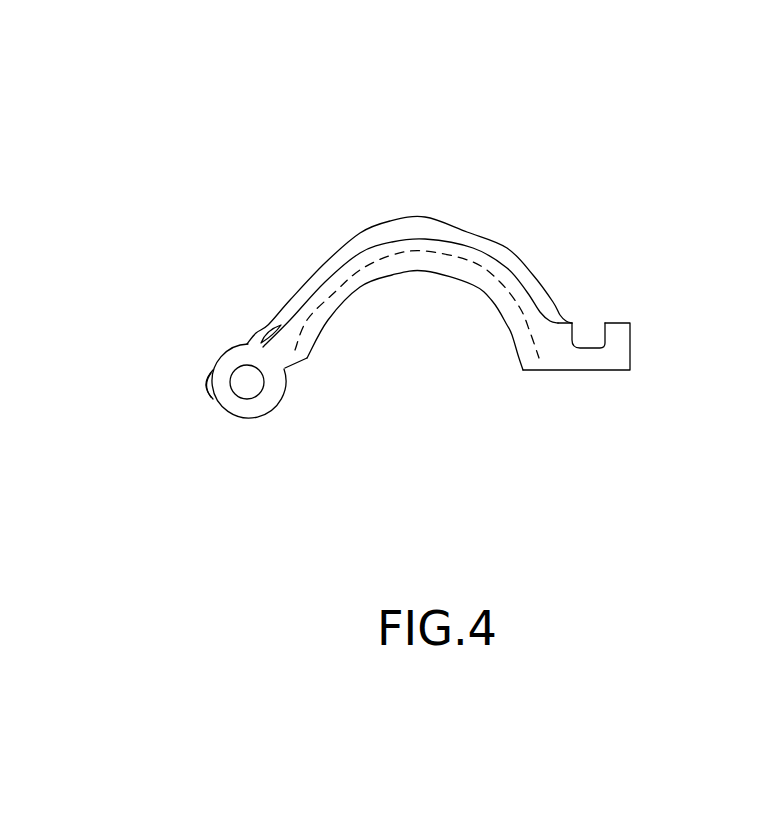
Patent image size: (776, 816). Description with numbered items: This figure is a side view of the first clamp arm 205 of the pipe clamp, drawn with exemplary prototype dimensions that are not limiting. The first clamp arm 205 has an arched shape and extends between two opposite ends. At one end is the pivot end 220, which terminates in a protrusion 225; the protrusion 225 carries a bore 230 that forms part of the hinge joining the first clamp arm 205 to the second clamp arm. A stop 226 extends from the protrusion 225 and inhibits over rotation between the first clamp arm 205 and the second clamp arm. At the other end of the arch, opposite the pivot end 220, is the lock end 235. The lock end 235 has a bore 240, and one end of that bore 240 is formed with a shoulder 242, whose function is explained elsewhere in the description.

The first clamp arm 205 is at (375, 227).
The pivot end 220 is at (235, 493).
The protrusion 225 is at (237, 357).
The stop 226 is at (202, 395).
The bore 230 is at (247, 365).
The lock end 235 is at (662, 433).
The bore 240 is at (588, 370).
The shoulder 242 is at (605, 346).